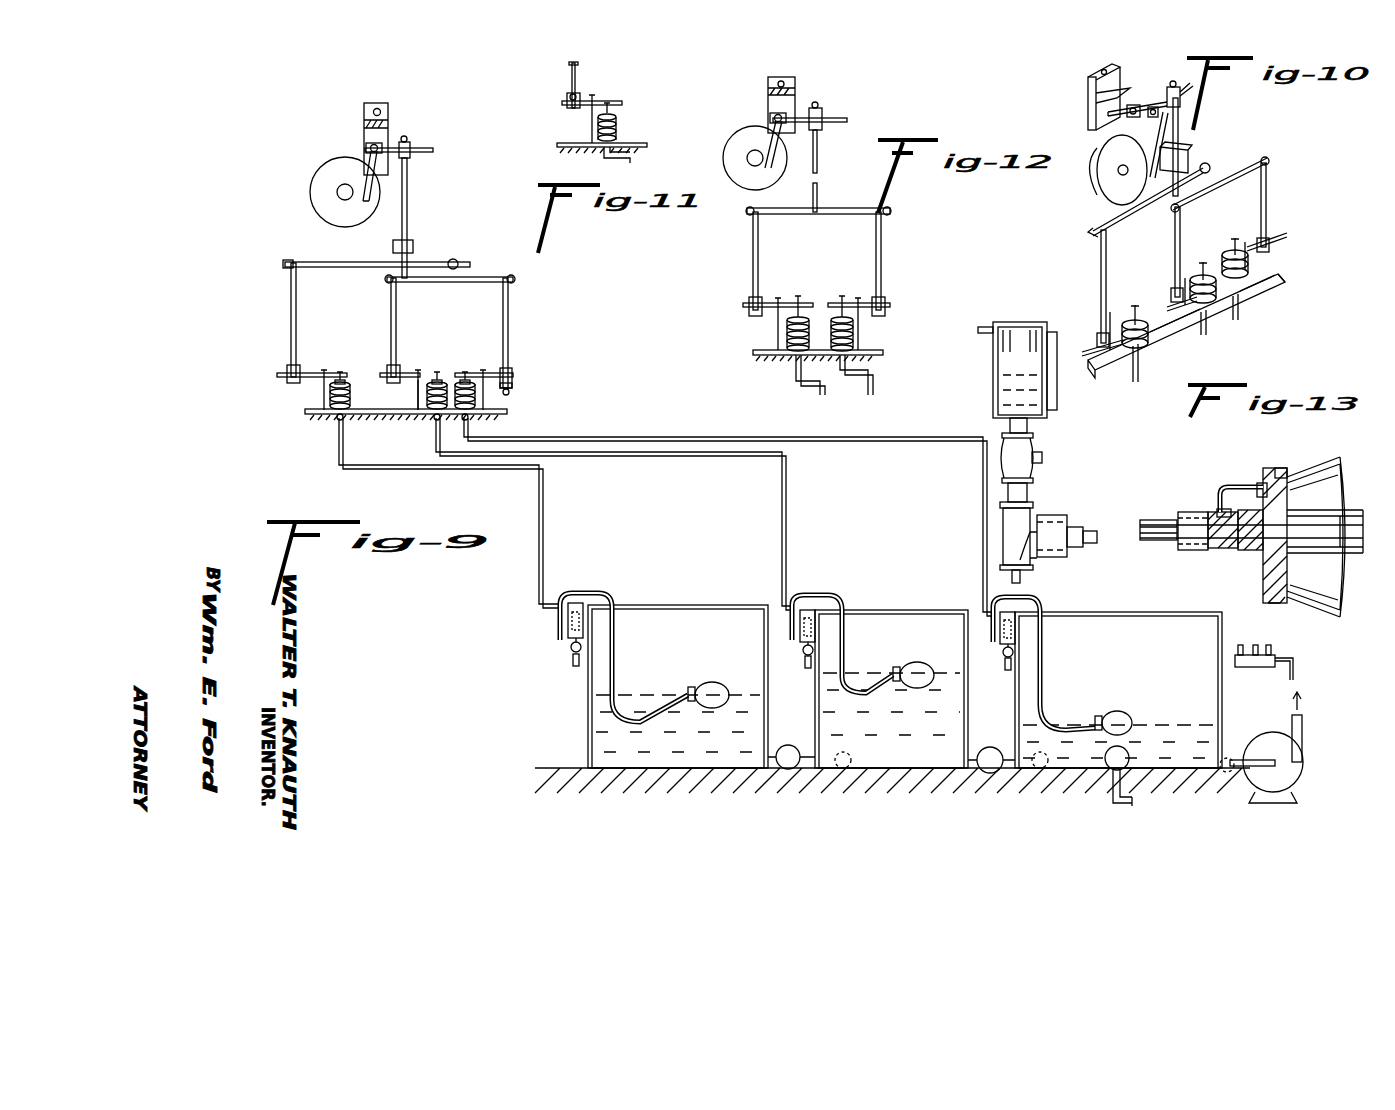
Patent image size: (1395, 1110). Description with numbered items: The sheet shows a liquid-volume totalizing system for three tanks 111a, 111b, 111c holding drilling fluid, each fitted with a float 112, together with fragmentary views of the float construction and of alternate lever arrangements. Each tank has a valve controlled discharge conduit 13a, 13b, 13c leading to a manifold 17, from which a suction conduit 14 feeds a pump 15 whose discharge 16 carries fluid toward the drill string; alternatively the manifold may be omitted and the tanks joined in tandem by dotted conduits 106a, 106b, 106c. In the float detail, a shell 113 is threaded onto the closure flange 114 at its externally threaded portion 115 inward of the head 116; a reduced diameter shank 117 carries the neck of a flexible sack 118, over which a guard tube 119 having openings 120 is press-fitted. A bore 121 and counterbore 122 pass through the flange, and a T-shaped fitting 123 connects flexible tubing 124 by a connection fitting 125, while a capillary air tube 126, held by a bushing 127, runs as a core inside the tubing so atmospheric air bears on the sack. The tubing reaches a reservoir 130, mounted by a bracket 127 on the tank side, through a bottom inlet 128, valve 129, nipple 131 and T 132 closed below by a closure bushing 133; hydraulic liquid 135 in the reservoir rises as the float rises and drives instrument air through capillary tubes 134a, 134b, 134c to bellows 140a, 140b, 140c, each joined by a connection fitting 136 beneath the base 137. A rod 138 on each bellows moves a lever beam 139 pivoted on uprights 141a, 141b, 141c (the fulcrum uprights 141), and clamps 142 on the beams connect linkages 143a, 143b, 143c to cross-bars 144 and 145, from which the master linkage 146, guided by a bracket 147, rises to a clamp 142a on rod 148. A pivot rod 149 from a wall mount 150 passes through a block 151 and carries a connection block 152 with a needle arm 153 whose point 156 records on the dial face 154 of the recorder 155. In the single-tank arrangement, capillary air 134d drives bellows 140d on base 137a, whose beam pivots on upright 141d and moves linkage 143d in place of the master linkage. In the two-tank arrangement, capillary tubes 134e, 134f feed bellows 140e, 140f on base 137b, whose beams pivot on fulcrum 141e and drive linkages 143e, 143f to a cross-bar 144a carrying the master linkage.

In FIG. 9, the valve controlled discharge conduit 13a is at (798, 752).
In FIG. 9, the valve controlled discharge conduit 13b is at (998, 748).
In FIG. 9, the valve controlled discharge conduit 13c is at (1120, 803).
In FIG. 9, the suction conduit 14 is at (1288, 678).
In FIG. 9, the pump 15 is at (1270, 740).
In FIG. 9, the pump outlet 16 is at (1302, 720).
In FIG. 9, the manifold 17 is at (1250, 667).
In FIG. 9, the tandem connecting conduit 106a is at (851, 760).
In FIG. 9, the tandem connecting conduit 106b is at (1040, 768).
In FIG. 9, the tandem connecting conduit 106c is at (1228, 772).
In FIG. 9, the tank 111a is at (588, 715).
In FIG. 9, the tank 111b is at (815, 715).
In FIG. 9, the tank 111c is at (1015, 705).
In FIG. 9, the float 112 is at (716, 682).
In FIG. 13, the float 112 is at (1316, 451).
In FIG. 13, the shell 113 is at (1338, 460).
In FIG. 13, the closure flange 114 is at (1257, 596).
In FIG. 13, the externally threaded portion 115 is at (1280, 468).
In FIG. 13, the head 116 is at (1272, 603).
In FIG. 13, the reduced diameter shank 117 is at (1305, 575).
In FIG. 13, the flexible sack 118 is at (1356, 510).
In FIG. 13, the protective sleeve or guard tube 119 is at (1316, 508).
In FIG. 13, the openings 120 is at (1345, 510).
In FIG. 13, the bore 121 is at (1302, 540).
In FIG. 13, the internally threaded counterbore 122 is at (1262, 552).
In FIG. 13, the T-shaped fitting 123 is at (1230, 548).
In FIG. 9, the flexible tubing 124 is at (1085, 547).
In FIG. 13, the flexible tubing 124 is at (1157, 540).
In FIG. 9, the connection fitting 125 is at (1065, 525).
In FIG. 13, the connection fitting 125 is at (1190, 550).
In FIG. 9, the capillary air tube 126 is at (1022, 580).
In FIG. 13, the capillary air tube 126 is at (1178, 515).
In FIG. 9, the bushing 127 is at (1057, 395).
In FIG. 13, the bushing 127 is at (1222, 509).
In FIG. 9, the bottom inlet nipple 128 is at (1010, 430).
In FIG. 9, the valve 129 is at (1044, 450).
In FIG. 9, the reservoir 130 is at (986, 407).
In FIG. 9, the nipple 131 is at (1033, 490).
In FIG. 9, the T 132 is at (1045, 509).
In FIG. 9, the closure bushing 133 is at (1035, 560).
In FIG. 9, the capillary tube 134a is at (545, 540).
In FIG. 10, the capillary tube 134a is at (1138, 382).
In FIG. 9, the capillary tube 134b is at (787, 540).
In FIG. 10, the capillary tube 134b is at (1208, 335).
In FIG. 9, the capillary tube 134c is at (983, 530).
In FIG. 10, the capillary tube 134c is at (1240, 320).
In FIG. 11, the capillary air tube 134d is at (604, 158).
In FIG. 12, the capillary tube 134e is at (820, 395).
In FIG. 12, the capillary tube 134f is at (870, 395).
In FIG. 9, the hydraulic liquid 135 is at (1033, 358).
In FIG. 9, the connection fitting 136 is at (338, 418).
In FIG. 9, the base 137 is at (482, 397).
In FIG. 10, the base 137 is at (1283, 275).
In FIG. 11, the base 137a is at (630, 143).
In FIG. 12, the base 137b is at (757, 360).
In FIG. 9, the upright rod or connection member 138 is at (338, 370).
In FIG. 11, the upright rod or connection member 138 is at (608, 103).
In FIG. 12, the upright rod or connection member 138 is at (798, 296).
In FIG. 10, the upright rod or connection member 138 is at (1150, 290).
In FIG. 9, the lever arm or beam 139 is at (322, 372).
In FIG. 11, the lever arm or beam 139 is at (593, 95).
In FIG. 12, the lever arm or beam 139 is at (778, 298).
In FIG. 10, the lever arm or beam 139 is at (1085, 350).
In FIG. 9, the bellows 140a is at (340, 380).
In FIG. 10, the bellows 140a is at (1148, 343).
In FIG. 9, the bellows 140b is at (440, 380).
In FIG. 10, the bellows 140b is at (1212, 302).
In FIG. 9, the bellows 140c is at (467, 380).
In FIG. 10, the bellows 140c is at (1247, 275).
In FIG. 11, the bellows 140d is at (618, 125).
In FIG. 12, the bellows 140e is at (805, 317).
In FIG. 12, the bellows 140f is at (830, 317).
In FIG. 10, the base plate 141 is at (1180, 335).
In FIG. 9, the upright 141a is at (300, 410).
In FIG. 10, the upright 141a is at (1100, 358).
In FIG. 9, the upright 141b is at (418, 402).
In FIG. 9, the upright 141c is at (513, 386).
In FIG. 10, the upright 141c is at (1275, 283).
In FIG. 11, the fulcrum or upright 141d is at (557, 145).
In FIG. 12, the fulcrum or pivot rod 141e is at (753, 352).
In FIG. 9, the clamp 142 is at (283, 378).
In FIG. 11, the clamp 142 is at (566, 104).
In FIG. 12, the clamp 142 is at (749, 312).
In FIG. 10, the clamp 142 is at (1095, 340).
In FIG. 9, the clamp 142a is at (408, 142).
In FIG. 12, the clamp 142a is at (820, 105).
In FIG. 10, the clamp 142a is at (1168, 87).
In FIG. 9, the linkage 143a is at (291, 333).
In FIG. 10, the linkage 143a is at (1101, 275).
In FIG. 9, the linkage 143b is at (392, 290).
In FIG. 10, the linkage 143b is at (1175, 263).
In FIG. 9, the linkage 143c is at (510, 285).
In FIG. 10, the linkage 143c is at (1266, 185).
In FIG. 11, the upright linkage 143d is at (580, 72).
In FIG. 12, the upright linkage 143e is at (753, 265).
In FIG. 12, the upright linkage 143f is at (881, 265).
In FIG. 9, the cross-bar 144 is at (352, 262).
In FIG. 10, the cross-bar 144 is at (1155, 200).
In FIG. 12, the cross-bar 144a is at (835, 208).
In FIG. 9, the cross-bar 145 is at (495, 277).
In FIG. 10, the cross-bar 145 is at (1255, 160).
In FIG. 9, the master linkage 146 is at (409, 212).
In FIG. 12, the master linkage 146 is at (818, 155).
In FIG. 10, the master linkage 146 is at (1180, 138).
In FIG. 9, the guide bracket 147 is at (414, 243).
In FIG. 10, the guide bracket 147 is at (1190, 155).
In FIG. 9, the rod 148 is at (427, 148).
In FIG. 12, the rod 148 is at (845, 118).
In FIG. 10, the rod 148 is at (1188, 85).
In FIG. 10, the pivot rod 149 is at (1108, 114).
In FIG. 9, the wall bracket or mount 150 is at (364, 113).
In FIG. 12, the wall bracket or mount 150 is at (782, 77).
In FIG. 10, the wall bracket or mount 150 is at (1088, 100).
In FIG. 10, the block 151 is at (1150, 107).
In FIG. 9, the connection block 152 is at (366, 146).
In FIG. 12, the connection block 152 is at (770, 115).
In FIG. 10, the connection block 152 is at (1140, 117).
In FIG. 9, the needle or pin arm 153 is at (367, 185).
In FIG. 12, the needle or pin arm 153 is at (770, 125).
In FIG. 10, the needle or pin arm 153 is at (1158, 176).
In FIG. 9, the dial face 154 is at (323, 200).
In FIG. 12, the dial face 154 is at (733, 150).
In FIG. 10, the dial face 154 is at (1110, 185).
In FIG. 9, the recorder 155 is at (295, 182).
In FIG. 12, the recorder 155 is at (720, 136).
In FIG. 10, the recorder 155 is at (1081, 163).
In FIG. 10, the recording pin point 156 is at (1100, 195).